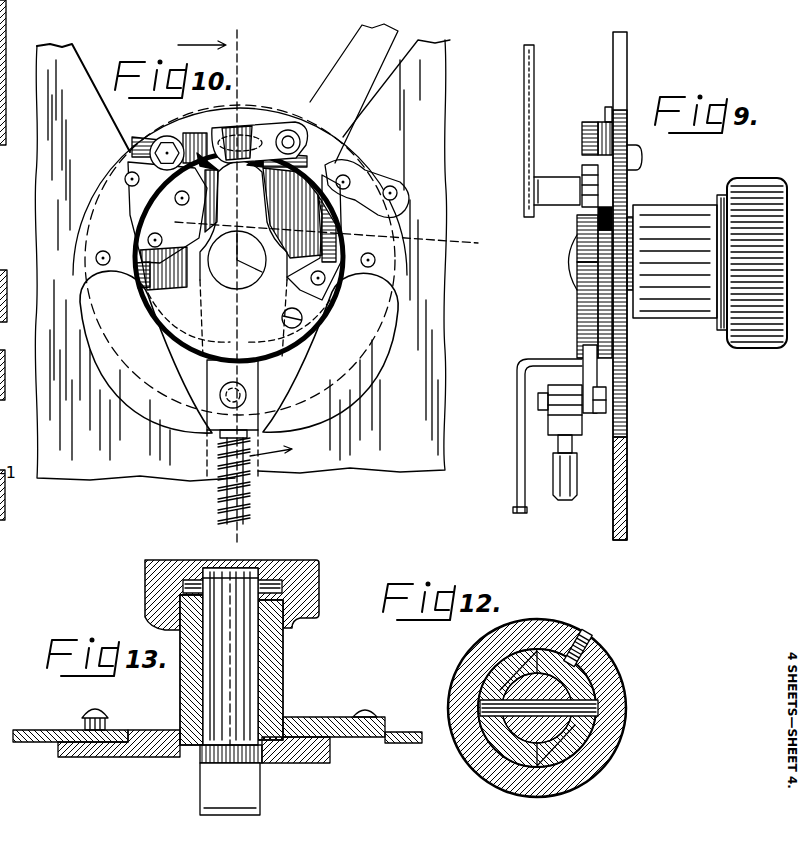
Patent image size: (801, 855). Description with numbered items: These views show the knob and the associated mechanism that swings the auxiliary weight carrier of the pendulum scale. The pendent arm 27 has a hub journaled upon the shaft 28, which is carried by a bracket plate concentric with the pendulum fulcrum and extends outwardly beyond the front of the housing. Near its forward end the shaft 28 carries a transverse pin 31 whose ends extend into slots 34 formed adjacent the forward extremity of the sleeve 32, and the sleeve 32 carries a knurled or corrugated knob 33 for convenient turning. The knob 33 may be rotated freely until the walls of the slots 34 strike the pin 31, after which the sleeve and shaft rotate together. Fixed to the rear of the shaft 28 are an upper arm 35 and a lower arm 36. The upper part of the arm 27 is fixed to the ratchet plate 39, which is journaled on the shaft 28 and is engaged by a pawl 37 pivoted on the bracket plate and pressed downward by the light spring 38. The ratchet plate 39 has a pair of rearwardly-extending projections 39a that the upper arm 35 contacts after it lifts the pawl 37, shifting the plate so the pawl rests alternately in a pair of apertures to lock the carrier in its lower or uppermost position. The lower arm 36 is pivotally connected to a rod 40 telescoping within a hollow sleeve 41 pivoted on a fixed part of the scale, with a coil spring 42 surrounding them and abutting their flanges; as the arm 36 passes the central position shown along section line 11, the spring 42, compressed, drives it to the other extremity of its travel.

In FIG. 10, the section line 11 is at (326, 283).
In FIG. 10, the pendent arm 27 is at (8, 392).
In FIG. 9, the pendent arm 27 is at (517, 392).
In FIG. 9, the shaft 28 is at (568, 268).
In FIG. 13, the shaft 28 is at (235, 675).
In FIG. 12, the shaft 28 is at (593, 732).
In FIG. 13, the transverse pin 31 is at (315, 598).
In FIG. 12, the transverse pin 31 is at (600, 703).
In FIG. 9, the sleeve 32 is at (652, 205).
In FIG. 13, the sleeve 32 is at (283, 697).
In FIG. 12, the sleeve 32 is at (612, 658).
In FIG. 9, the knob 33 is at (740, 348).
In FIG. 13, the knob 33 is at (317, 568).
In FIG. 12, the slots 34 is at (533, 653).
In FIG. 10, the upper arm 35 is at (206, 135).
In FIG. 9, the upper arm 35 is at (590, 197).
In FIG. 10, the lower arm 36 is at (245, 322).
In FIG. 9, the lower arm 36 is at (588, 368).
In FIG. 10, the pawl 37 is at (232, 118).
In FIG. 9, the pawl 37 is at (607, 117).
In FIG. 10, the light spring 38 is at (263, 127).
In FIG. 9, the light spring 38 is at (600, 127).
In FIG. 10, the ratchet plate 39 is at (307, 250).
In FIG. 9, the ratchet plate 39 is at (612, 340).
In FIG. 10, the rearwardly-extending projections 39a is at (163, 217).
In FIG. 9, the rod 40 is at (572, 443).
In FIG. 9, the hollow sleeve 41 is at (567, 473).
In FIG. 10, the coil spring 42 is at (247, 500).